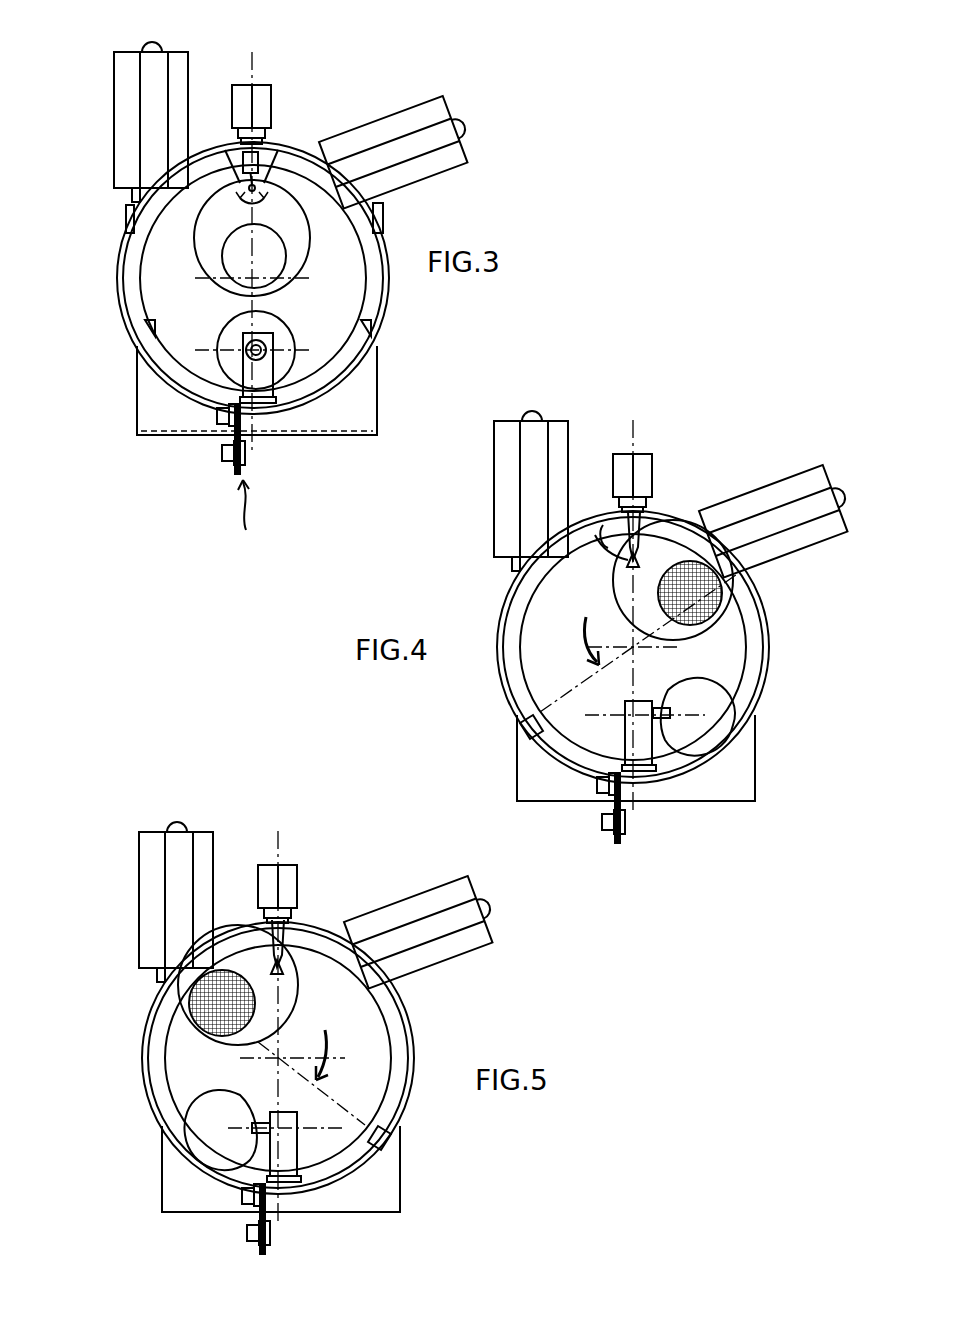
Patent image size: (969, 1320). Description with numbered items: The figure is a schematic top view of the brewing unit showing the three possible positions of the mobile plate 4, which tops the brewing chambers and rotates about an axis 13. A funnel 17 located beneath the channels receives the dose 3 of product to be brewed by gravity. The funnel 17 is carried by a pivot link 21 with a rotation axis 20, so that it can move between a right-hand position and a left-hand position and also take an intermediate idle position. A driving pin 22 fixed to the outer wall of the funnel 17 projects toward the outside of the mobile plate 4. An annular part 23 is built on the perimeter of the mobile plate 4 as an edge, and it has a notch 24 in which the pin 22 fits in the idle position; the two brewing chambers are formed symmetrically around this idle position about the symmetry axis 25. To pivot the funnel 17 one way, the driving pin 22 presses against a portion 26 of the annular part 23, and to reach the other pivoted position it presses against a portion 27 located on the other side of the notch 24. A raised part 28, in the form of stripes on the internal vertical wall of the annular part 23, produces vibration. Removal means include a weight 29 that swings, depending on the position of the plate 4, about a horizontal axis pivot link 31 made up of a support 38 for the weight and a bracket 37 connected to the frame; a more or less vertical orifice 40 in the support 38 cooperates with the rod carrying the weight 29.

In FIG. 5, the dose 3 is at (185, 1015).
In FIG. 3, the mobile plate 4 is at (350, 298).
In FIG. 4, the mobile plate 4 is at (725, 648).
In FIG. 5, the mobile plate 4 is at (367, 1068).
In FIG. 4, the axis 13 is at (648, 634).
In FIG. 3, the funnel 17 is at (303, 243).
In FIG. 4, the funnel 17 is at (672, 540).
In FIG. 5, the funnel 17 is at (233, 942).
In FIG. 3, the rotation axis 20 is at (282, 178).
In FIG. 3, the pivot link 21 is at (236, 187).
In FIG. 3, the driving pin 22 is at (266, 187).
In FIG. 4, the driving pin 22 is at (593, 540).
In FIG. 5, the driving pin 22 is at (285, 960).
In FIG. 3, the annular part 23 is at (173, 380).
In FIG. 3, the notch 24 is at (232, 85).
In FIG. 3, the symmetry axis 25 is at (252, 52).
In FIG. 3, the portion 26 is at (130, 263).
In FIG. 4, the portion 26 is at (527, 575).
In FIG. 3, the portion 27 is at (373, 267).
In FIG. 5, the portion 27 is at (385, 1010).
In FIG. 3, the raised part 28 is at (137, 320).
In FIG. 4, the raised part 28 is at (607, 537).
In FIG. 3, the weight 29 is at (275, 367).
In FIG. 4, the weight 29 is at (713, 717).
In FIG. 5, the weight 29 is at (223, 1138).
In FIG. 4, the horizontal axis pivot link 31 is at (653, 775).
In FIG. 5, the horizontal axis pivot link 31 is at (297, 1188).
In FIG. 3, the bracket 37 is at (246, 522).
In FIG. 3, the support 38 is at (273, 403).
In FIG. 3, the orifice 40 is at (266, 352).